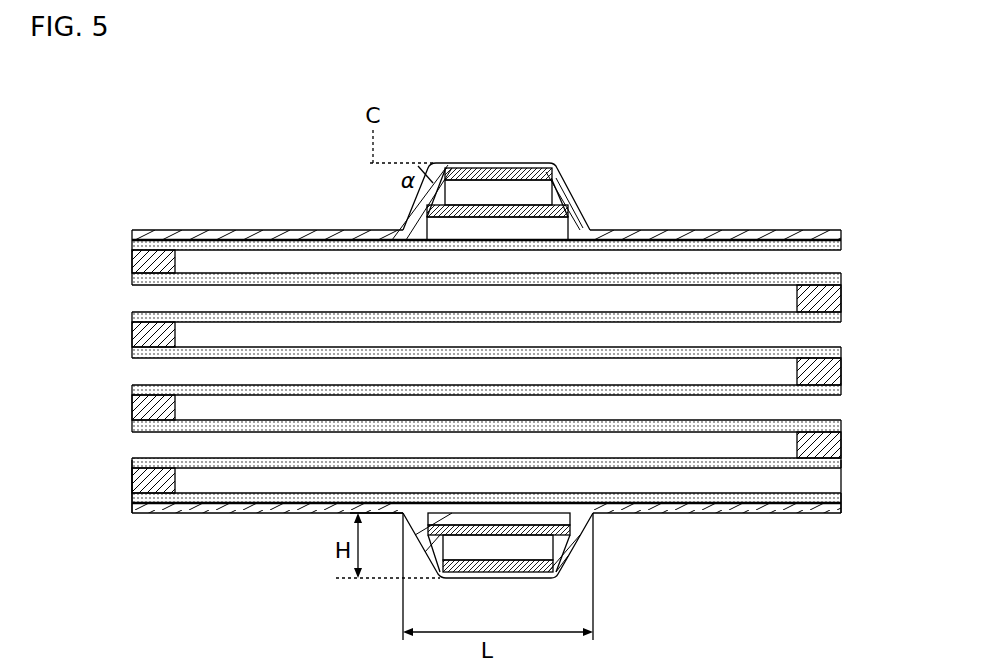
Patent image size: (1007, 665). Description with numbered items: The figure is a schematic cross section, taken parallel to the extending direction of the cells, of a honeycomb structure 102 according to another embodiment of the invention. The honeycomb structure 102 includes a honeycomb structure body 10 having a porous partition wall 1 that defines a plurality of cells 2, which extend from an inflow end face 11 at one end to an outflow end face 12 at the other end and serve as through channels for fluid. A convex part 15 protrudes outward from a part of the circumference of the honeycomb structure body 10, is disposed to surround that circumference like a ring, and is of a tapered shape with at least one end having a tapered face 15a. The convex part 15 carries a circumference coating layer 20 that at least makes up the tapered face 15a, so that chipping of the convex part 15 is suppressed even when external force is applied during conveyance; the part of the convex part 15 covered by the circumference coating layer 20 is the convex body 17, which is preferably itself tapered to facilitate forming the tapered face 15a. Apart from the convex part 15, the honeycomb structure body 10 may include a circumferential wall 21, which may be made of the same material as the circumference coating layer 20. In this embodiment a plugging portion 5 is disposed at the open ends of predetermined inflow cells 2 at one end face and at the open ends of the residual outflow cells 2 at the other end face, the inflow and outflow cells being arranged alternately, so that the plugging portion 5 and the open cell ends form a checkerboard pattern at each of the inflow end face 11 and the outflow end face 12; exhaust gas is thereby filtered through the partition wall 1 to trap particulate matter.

The honeycomb structure 102 is at (822, 86).
The partition wall 1 is at (545, 177).
The cells 2 is at (562, 230).
The plugging portion 5 is at (150, 262).
The honeycomb structure body 10 is at (209, 234).
The inflow end face 11 is at (133, 510).
The outflow end face 12 is at (841, 510).
The convex part 15 is at (559, 156).
The tapered face 15a is at (412, 205).
The convex body 17 is at (503, 160).
The circumference coating layer 20 is at (462, 167).
The circumferential wall 21 is at (692, 230).